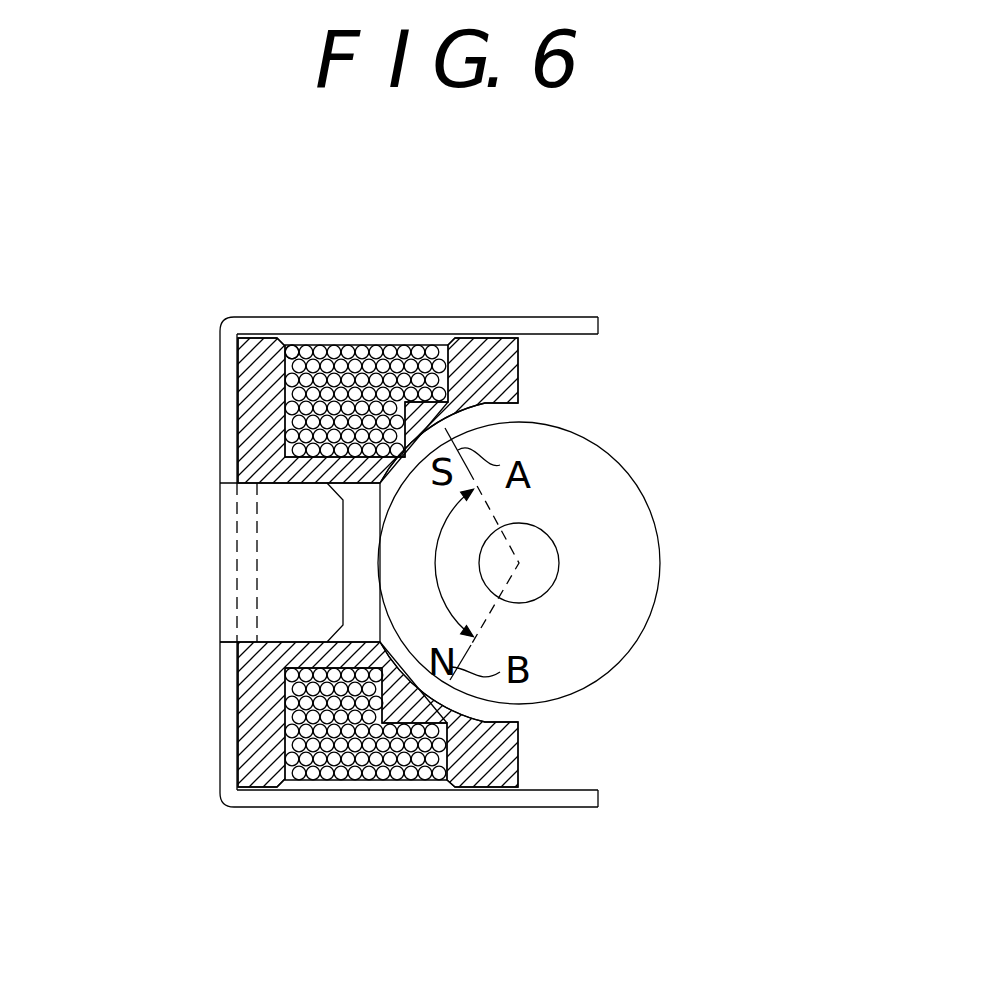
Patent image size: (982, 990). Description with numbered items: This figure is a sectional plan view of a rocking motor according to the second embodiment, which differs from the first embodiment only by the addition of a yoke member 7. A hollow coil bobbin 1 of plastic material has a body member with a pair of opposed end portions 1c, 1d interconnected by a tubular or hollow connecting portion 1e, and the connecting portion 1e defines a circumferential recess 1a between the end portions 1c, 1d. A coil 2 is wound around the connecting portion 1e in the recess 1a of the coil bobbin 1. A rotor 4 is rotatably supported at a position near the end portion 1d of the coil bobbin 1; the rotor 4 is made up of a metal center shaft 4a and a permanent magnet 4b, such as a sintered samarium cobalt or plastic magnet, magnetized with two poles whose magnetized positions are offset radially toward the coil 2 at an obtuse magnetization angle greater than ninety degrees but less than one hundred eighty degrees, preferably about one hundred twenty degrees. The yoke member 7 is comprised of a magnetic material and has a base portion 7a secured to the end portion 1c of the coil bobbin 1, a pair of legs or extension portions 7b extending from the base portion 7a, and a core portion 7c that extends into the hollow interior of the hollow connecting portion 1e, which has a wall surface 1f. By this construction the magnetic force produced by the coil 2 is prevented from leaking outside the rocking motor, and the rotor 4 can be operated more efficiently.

The coil bobbin 1 is at (502, 338).
The circumferential recess 1a is at (311, 350).
The end portion 1c is at (250, 375).
The end portion 1d is at (495, 380).
The connecting portion 1e is at (292, 472).
The wall surface 1f is at (293, 483).
The coil 2 is at (383, 350).
The rotor 4 is at (590, 563).
The center shaft 4a is at (548, 565).
The permanent magnet 4b is at (640, 520).
The yoke member 7 is at (393, 540).
The base portion 7a is at (227, 470).
The extension portions 7b is at (538, 325).
The core portion 7c is at (274, 640).